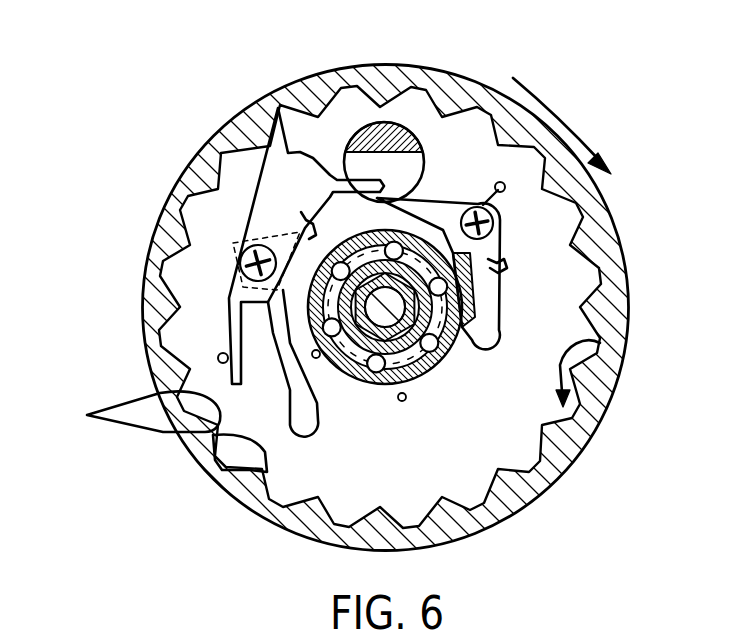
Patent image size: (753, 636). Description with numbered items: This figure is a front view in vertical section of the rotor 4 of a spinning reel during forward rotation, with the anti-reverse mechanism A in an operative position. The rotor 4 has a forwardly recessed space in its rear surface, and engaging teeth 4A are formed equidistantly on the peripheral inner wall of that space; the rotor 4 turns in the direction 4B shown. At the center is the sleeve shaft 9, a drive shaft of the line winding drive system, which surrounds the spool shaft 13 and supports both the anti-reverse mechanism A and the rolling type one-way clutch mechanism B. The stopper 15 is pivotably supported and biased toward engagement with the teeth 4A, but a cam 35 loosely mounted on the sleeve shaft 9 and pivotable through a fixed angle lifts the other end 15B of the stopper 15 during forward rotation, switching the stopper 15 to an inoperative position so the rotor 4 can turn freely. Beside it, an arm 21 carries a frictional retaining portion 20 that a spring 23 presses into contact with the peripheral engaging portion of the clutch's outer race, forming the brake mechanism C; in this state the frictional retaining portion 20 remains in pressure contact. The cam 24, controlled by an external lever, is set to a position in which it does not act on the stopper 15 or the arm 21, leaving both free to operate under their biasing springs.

The rotor 4 is at (613, 245).
The engaging teeth 4A is at (154, 431).
The ring rotation direction 4B is at (600, 345).
The stopper 15 is at (288, 152).
The other end of the stopper 15B is at (310, 413).
The cam 24 is at (403, 135).
The frictional retaining portion 20 is at (470, 312).
The arm 21 is at (503, 287).
The spring 23 is at (500, 190).
The sleeve shaft 9 is at (335, 382).
The cam 35 is at (348, 403).
The spool shaft 13 is at (390, 311).
The anti-reverse mechanism A is at (243, 177).
The one-way clutch mechanism B is at (429, 392).
The brake mechanism C is at (474, 358).